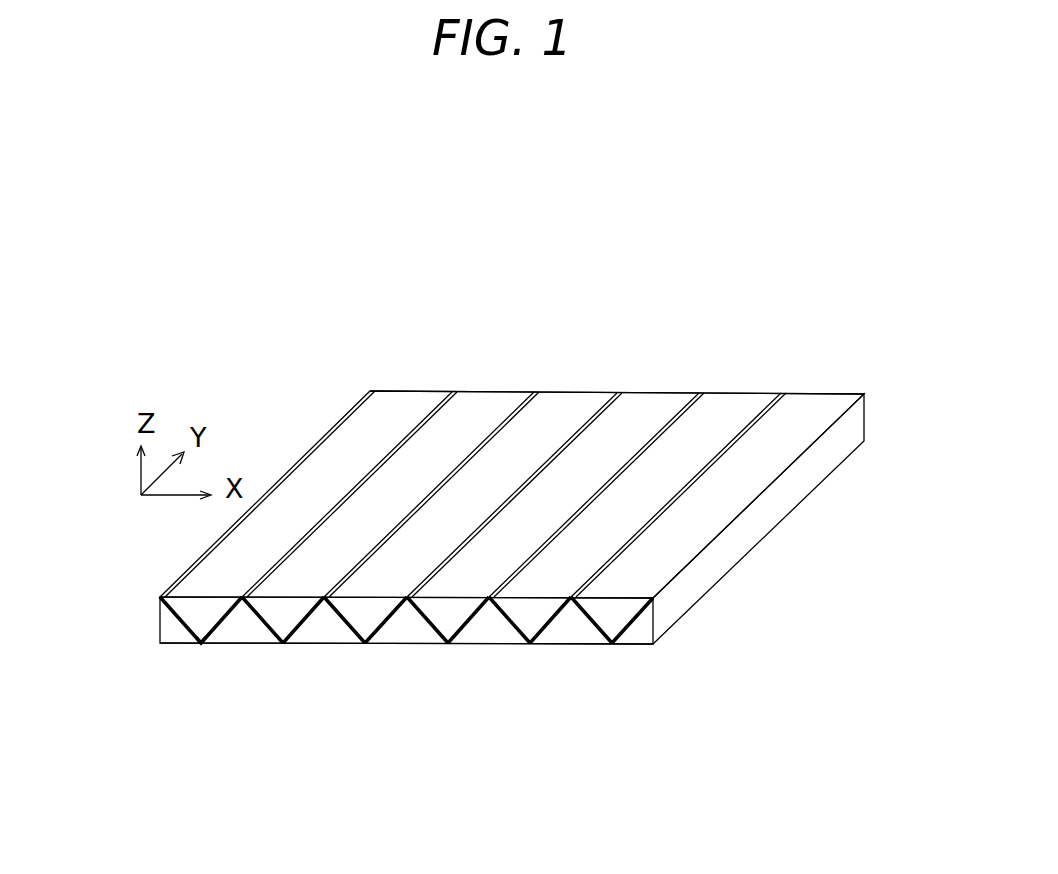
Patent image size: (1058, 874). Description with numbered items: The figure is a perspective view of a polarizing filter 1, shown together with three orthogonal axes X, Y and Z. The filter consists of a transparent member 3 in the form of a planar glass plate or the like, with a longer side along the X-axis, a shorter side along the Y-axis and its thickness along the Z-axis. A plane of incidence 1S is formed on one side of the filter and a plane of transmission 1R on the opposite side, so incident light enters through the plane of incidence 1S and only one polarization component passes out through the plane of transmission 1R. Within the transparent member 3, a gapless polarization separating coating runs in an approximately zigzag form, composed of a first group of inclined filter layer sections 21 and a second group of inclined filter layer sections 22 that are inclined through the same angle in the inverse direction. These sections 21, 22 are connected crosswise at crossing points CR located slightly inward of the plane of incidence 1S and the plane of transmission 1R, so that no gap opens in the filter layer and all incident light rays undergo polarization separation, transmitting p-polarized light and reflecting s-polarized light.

The polarizing filter 1 is at (338, 417).
The plane of transmission 1R is at (818, 393).
The plane of incidence 1S is at (627, 647).
The transparent member 3 is at (645, 633).
The inclined filter layer sections of the first group 21 is at (183, 622).
The inclined filter layer sections of the second group 22 is at (227, 620).
The crossing points CR is at (205, 645).